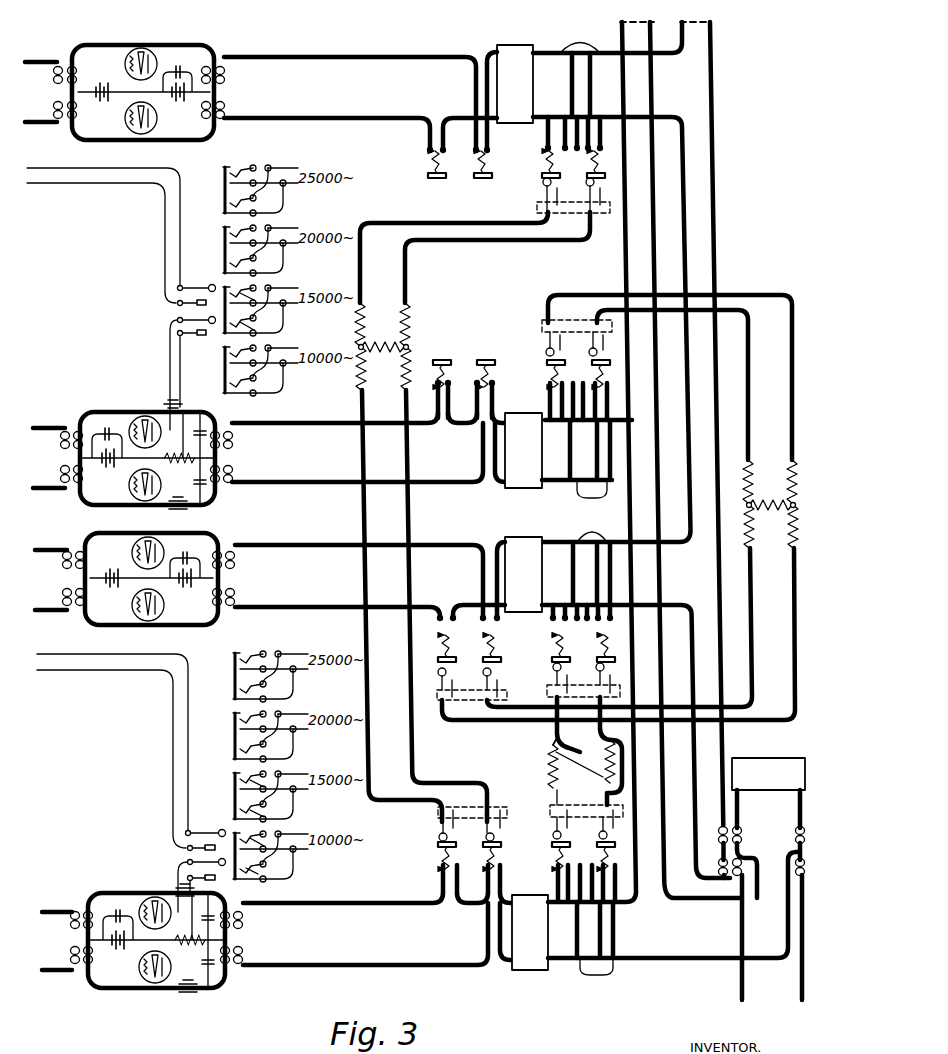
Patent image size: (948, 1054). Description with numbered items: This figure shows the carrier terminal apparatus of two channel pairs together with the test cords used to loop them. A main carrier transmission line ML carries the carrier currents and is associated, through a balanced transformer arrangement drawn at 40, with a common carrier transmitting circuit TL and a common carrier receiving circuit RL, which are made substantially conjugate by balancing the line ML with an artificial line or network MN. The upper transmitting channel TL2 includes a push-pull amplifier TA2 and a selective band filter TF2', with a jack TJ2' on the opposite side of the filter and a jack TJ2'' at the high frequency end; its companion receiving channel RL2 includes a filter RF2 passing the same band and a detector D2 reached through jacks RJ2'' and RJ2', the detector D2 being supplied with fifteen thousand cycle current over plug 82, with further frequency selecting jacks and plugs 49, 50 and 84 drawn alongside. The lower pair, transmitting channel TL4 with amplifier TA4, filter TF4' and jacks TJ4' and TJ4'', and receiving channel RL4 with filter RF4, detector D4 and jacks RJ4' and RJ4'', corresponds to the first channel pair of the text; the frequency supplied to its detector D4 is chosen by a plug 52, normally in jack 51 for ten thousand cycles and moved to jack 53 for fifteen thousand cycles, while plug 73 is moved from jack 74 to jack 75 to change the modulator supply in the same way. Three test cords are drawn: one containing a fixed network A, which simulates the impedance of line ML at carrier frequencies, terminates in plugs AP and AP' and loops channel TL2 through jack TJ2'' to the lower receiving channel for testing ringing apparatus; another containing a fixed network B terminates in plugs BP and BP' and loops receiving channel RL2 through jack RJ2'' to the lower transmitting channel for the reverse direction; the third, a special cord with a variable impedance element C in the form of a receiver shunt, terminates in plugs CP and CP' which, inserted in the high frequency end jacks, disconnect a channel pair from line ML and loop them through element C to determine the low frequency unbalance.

The amplifier TA2 is at (88, 63).
The transmitting channel TL2 is at (335, 70).
The filter TF2' is at (575, 282).
The jack TJ2' is at (430, 156).
The jack TJ2'' is at (548, 147).
The plug AP is at (537, 195).
The fixed network A is at (383, 333).
The plug BP is at (657, 359).
The fixed network B is at (620, 590).
The jack RJ2' is at (464, 363).
The jack RJ2'' is at (550, 378).
The receiving channel RL2 is at (295, 425).
The filter RF2 is at (523, 420).
The detector D2 is at (103, 418).
The switch contact 50 is at (190, 295).
The plug 82 is at (195, 323).
The frequency selector switch 49 is at (248, 295).
The frequency selector switch 84 is at (247, 325).
The amplifier TA4 is at (117, 555).
The transmitting channel TL4 is at (298, 552).
The filter TF4' is at (591, 691).
The jack TJ4' is at (462, 618).
The jack TJ4'' is at (560, 633).
The plug CP is at (528, 691).
The plug BP' is at (448, 729).
The variable impedance element C is at (567, 765).
The plug CP' is at (563, 814).
The plug AP' is at (447, 824).
The jack RJ4'' is at (560, 865).
The jack RJ4' is at (444, 867).
The receiving channel RL4 is at (363, 910).
The filter RF4 is at (533, 913).
The detector D4 is at (117, 893).
The plug 73 is at (203, 842).
The plug 52 is at (203, 870).
The jack 75 is at (257, 782).
The jack 53 is at (257, 812).
The jack 74 is at (257, 840).
The jack 51 is at (250, 870).
The common carrier receiving circuit RL is at (640, 253).
The common carrier transmitting circuit TL is at (696, 162).
The artificial line network MN is at (768, 793).
The transformer 40 is at (742, 832).
The main carrier transmission line ML is at (802, 978).